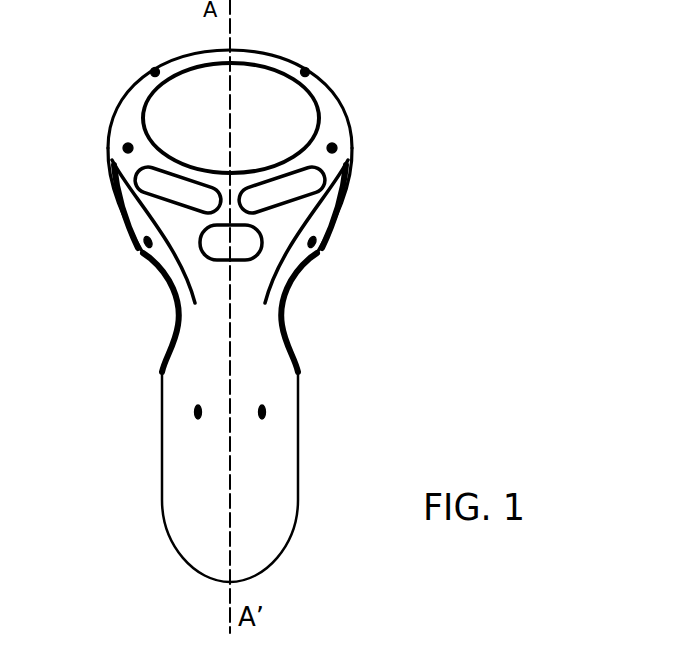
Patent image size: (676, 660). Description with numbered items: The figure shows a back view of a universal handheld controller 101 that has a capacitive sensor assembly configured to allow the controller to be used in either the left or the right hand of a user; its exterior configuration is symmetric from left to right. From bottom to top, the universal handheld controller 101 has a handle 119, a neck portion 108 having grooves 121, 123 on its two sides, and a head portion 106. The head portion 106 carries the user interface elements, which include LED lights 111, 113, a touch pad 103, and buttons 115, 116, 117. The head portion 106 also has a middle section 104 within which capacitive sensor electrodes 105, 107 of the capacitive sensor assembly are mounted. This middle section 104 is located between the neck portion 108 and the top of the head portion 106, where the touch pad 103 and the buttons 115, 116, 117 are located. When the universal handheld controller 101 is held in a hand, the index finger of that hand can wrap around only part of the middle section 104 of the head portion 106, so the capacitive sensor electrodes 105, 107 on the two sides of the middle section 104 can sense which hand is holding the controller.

The universal handheld controller 101 is at (300, 390).
The touch pad 103 is at (143, 108).
The middle section 104 is at (143, 229).
The capacitive sensor electrode 105 is at (112, 188).
The head portion 106 is at (337, 117).
The capacitive sensor electrode 107 is at (348, 183).
The neck portion 108 is at (198, 347).
The LED light 111 is at (153, 70).
The LED light 113 is at (307, 72).
The button 115 is at (140, 186).
The button 116 is at (218, 263).
The button 117 is at (304, 202).
The handle 119 is at (162, 457).
The groove 121 is at (170, 313).
The groove 123 is at (288, 313).